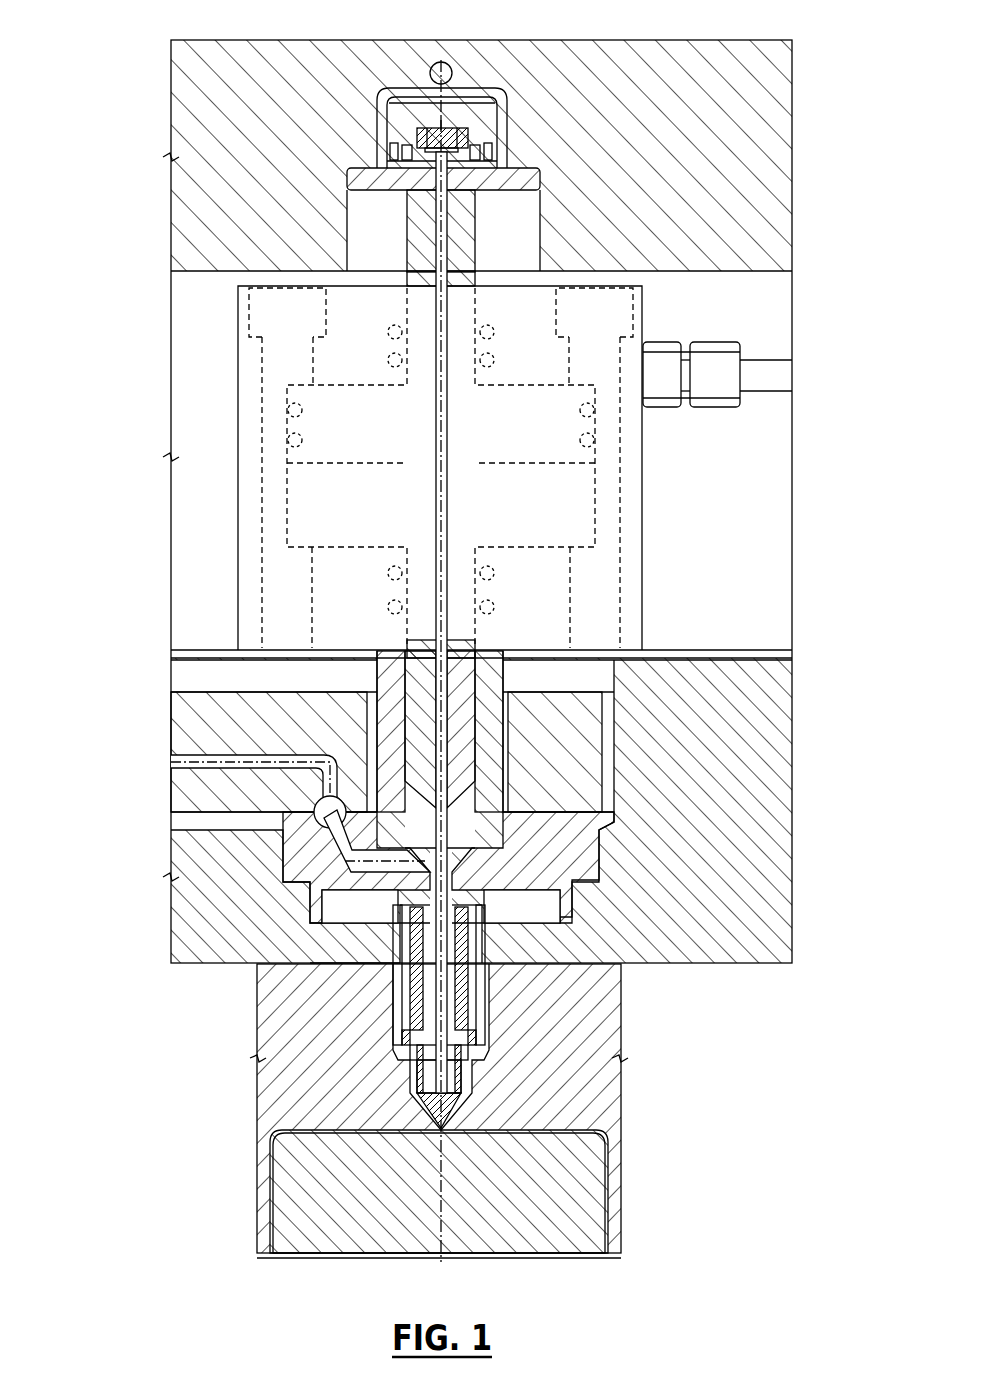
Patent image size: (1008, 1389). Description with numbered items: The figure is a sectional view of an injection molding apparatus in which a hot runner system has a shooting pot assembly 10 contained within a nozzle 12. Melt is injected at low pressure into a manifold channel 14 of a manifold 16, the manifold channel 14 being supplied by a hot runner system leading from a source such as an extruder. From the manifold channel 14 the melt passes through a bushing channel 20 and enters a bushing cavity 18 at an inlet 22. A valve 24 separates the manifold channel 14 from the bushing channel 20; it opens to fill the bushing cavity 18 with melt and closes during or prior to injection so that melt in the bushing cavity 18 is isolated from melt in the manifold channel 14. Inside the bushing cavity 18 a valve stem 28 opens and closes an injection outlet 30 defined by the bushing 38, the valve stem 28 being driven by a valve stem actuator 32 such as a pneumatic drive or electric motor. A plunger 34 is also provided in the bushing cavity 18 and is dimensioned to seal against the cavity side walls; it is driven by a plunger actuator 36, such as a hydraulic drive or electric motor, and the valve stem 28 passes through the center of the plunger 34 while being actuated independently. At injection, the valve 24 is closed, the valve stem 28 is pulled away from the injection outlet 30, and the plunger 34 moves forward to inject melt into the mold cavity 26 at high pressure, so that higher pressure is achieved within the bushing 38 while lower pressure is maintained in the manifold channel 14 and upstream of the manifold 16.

The shooting pot assembly 10 is at (460, 717).
The nozzle 12 is at (442, 1040).
The manifold channel 14 is at (178, 766).
The manifold 16 is at (192, 710).
The bushing cavity 18 is at (312, 885).
The bushing channel 20 is at (318, 828).
The inlet 22 is at (362, 964).
The valve 24 is at (318, 828).
The mold cavity 26 is at (275, 1130).
The valve stem 28 is at (333, 930).
The injection outlet 30 is at (441, 1130).
The valve stem actuator 32 is at (485, 118).
The plunger 34 is at (503, 697).
The plunger actuator 36 is at (549, 406).
The bushing 38 is at (567, 857).